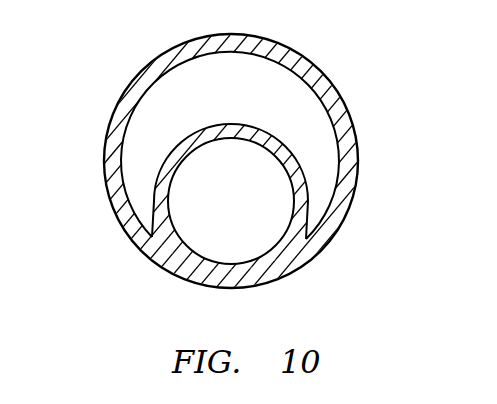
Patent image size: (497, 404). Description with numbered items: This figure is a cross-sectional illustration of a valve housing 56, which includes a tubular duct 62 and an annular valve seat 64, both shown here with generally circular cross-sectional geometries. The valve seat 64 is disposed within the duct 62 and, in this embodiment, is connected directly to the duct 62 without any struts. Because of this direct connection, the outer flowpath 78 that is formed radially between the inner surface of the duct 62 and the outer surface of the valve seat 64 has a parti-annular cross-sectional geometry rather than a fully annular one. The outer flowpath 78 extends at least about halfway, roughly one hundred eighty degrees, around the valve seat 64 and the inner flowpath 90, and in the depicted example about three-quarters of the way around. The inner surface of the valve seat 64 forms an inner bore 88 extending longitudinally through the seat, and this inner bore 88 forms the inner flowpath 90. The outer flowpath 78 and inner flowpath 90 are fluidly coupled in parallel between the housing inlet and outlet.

The valve housing 56 is at (248, 164).
The tubular duct 62 is at (248, 164).
The annular valve seat 64 is at (185, 194).
The outer flowpath 78 is at (208, 101).
The inner bore 88 is at (231, 201).
The inner flowpath 90 is at (195, 214).